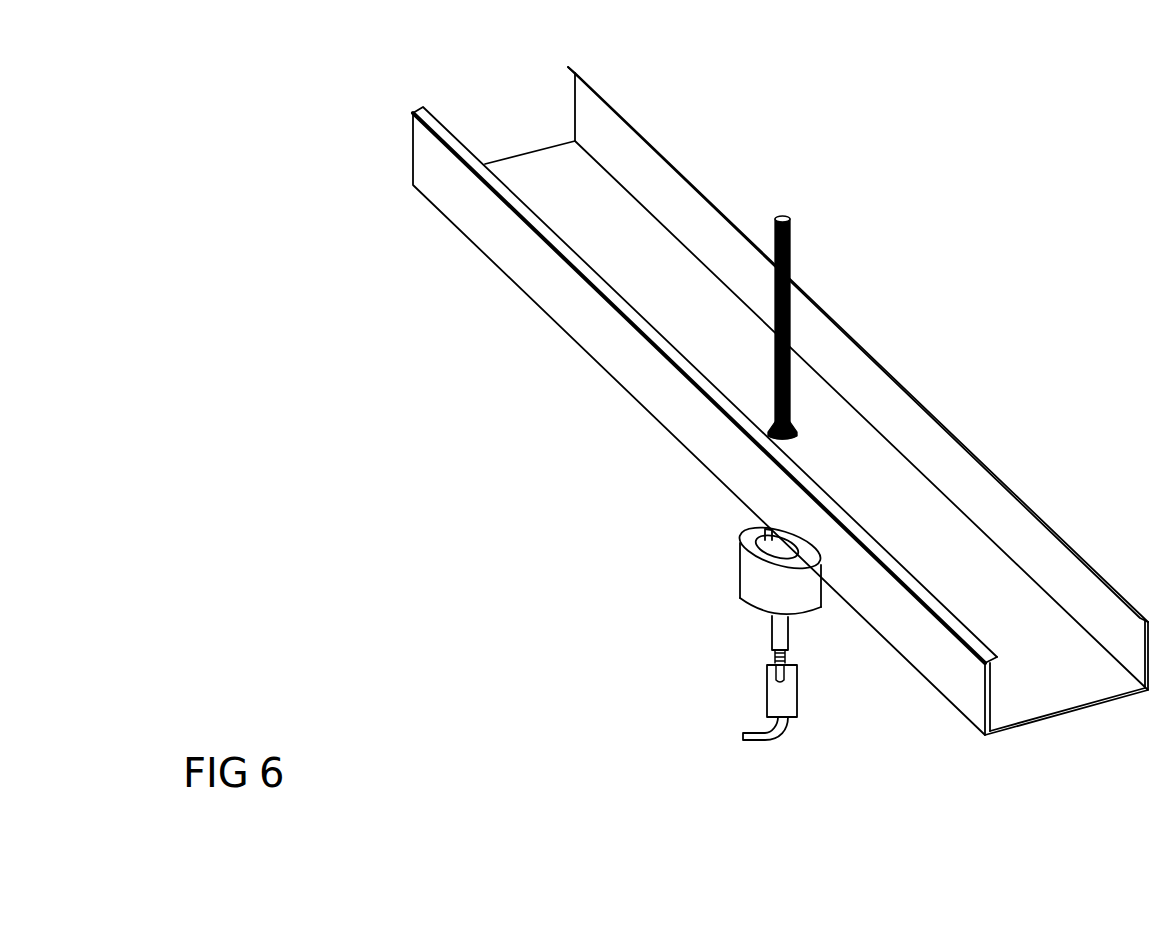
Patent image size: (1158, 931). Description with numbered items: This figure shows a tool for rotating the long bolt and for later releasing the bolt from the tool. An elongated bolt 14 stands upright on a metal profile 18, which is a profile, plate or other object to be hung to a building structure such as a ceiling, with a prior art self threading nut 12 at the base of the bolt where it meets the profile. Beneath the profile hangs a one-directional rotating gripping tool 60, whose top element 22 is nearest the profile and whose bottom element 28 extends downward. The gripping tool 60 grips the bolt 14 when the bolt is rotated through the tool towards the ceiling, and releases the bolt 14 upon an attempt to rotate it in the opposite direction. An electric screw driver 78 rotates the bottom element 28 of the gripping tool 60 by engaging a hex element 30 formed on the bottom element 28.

The self threading nut 12 is at (788, 424).
The elongated bolt 14 is at (790, 252).
The metal profile 18 is at (997, 507).
The top element of the gripping tool 22 is at (748, 572).
The bottom element of the gripping tool 28 is at (783, 632).
The hex element 30 is at (777, 658).
The gripping tool 60 is at (700, 585).
The screw driver 78 is at (778, 707).